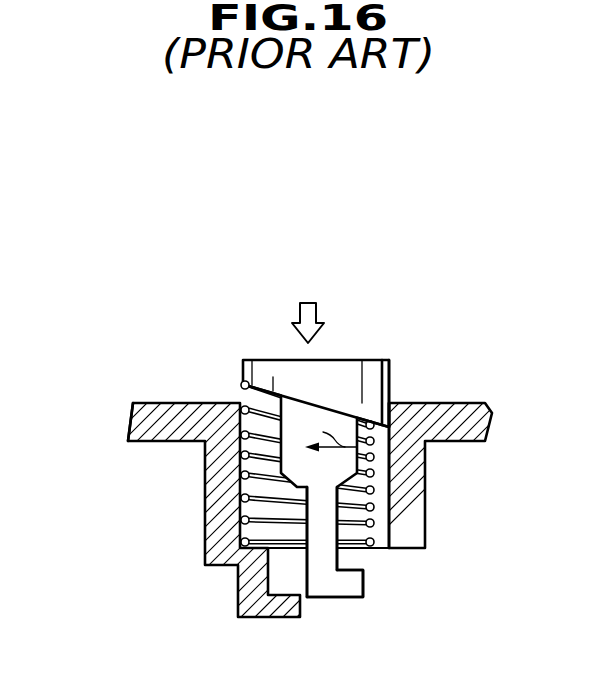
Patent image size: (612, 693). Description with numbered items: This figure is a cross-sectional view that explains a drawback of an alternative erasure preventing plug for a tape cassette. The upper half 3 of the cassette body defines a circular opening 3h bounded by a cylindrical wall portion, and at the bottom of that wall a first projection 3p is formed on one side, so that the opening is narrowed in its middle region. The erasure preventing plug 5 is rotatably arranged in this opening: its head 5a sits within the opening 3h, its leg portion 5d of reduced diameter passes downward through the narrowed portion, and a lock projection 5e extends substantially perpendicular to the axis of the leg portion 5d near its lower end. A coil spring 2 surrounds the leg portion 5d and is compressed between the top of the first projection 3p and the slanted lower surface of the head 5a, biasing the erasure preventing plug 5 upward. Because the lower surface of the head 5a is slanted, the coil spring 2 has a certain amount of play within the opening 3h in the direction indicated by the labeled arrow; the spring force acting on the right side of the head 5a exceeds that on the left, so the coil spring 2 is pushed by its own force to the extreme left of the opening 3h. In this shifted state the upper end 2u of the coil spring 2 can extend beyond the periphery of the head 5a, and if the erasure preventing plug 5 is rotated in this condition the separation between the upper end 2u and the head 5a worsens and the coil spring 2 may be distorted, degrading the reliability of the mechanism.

The coil spring 2 is at (374, 523).
The upper end of the coil spring 2u is at (243, 385).
The upper half 3 is at (425, 492).
The circular opening 3h is at (430, 403).
The first projection 3p is at (140, 421).
The erasure preventing plug 5 is at (367, 352).
The head 5a is at (385, 370).
The leg portion 5d is at (320, 585).
The lock projection 5e is at (353, 587).